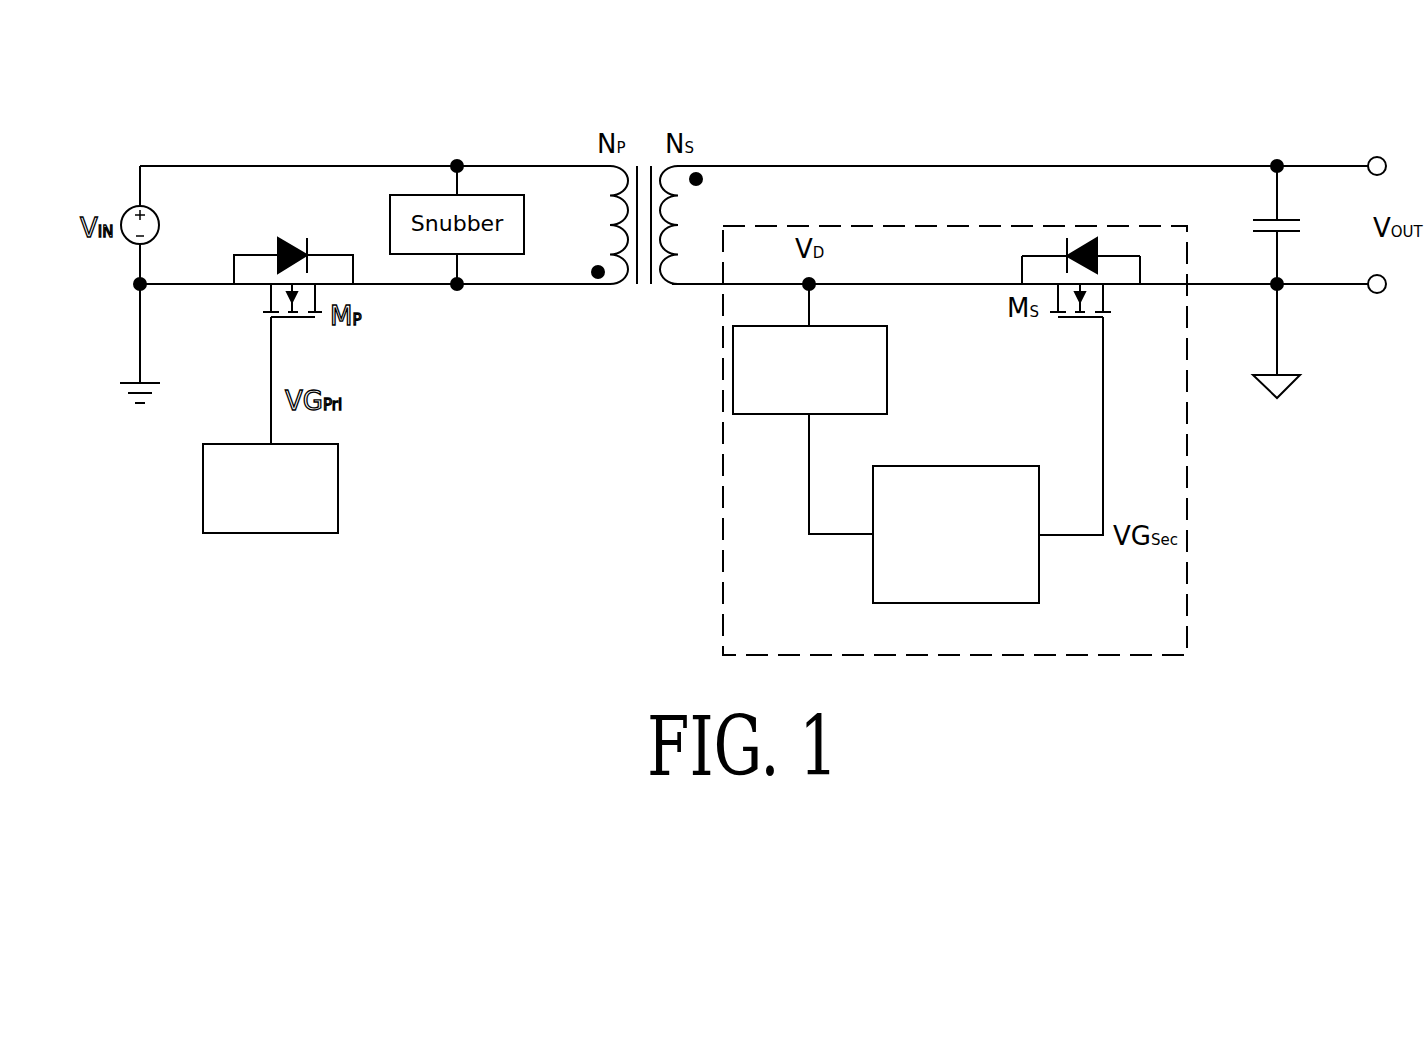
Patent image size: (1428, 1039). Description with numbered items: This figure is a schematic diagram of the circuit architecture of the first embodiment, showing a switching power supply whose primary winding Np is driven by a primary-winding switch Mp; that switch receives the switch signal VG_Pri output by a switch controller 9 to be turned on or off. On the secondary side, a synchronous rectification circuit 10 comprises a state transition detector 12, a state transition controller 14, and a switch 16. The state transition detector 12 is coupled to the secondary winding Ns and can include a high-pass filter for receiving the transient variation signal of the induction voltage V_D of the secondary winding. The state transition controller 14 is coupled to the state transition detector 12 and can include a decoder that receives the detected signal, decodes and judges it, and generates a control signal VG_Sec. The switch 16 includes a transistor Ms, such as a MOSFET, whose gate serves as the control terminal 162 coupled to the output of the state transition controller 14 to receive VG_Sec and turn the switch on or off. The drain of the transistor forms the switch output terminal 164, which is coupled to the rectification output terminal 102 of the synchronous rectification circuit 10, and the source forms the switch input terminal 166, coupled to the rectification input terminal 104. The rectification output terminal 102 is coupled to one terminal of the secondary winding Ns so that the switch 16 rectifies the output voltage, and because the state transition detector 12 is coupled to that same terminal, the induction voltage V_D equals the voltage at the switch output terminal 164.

The switch controller 9 is at (338, 498).
The synchronous rectification circuit 10 is at (1140, 656).
The state transition detector 12 is at (763, 415).
The state transition controller 14 is at (1010, 465).
The switch 16 is at (1129, 313).
The rectification output terminal 102 is at (716, 288).
The rectification input terminal 104 is at (1194, 289).
The control terminal 162 is at (1100, 318).
The switch output terminal 164 is at (1020, 283).
The switch input terminal 166 is at (1140, 283).